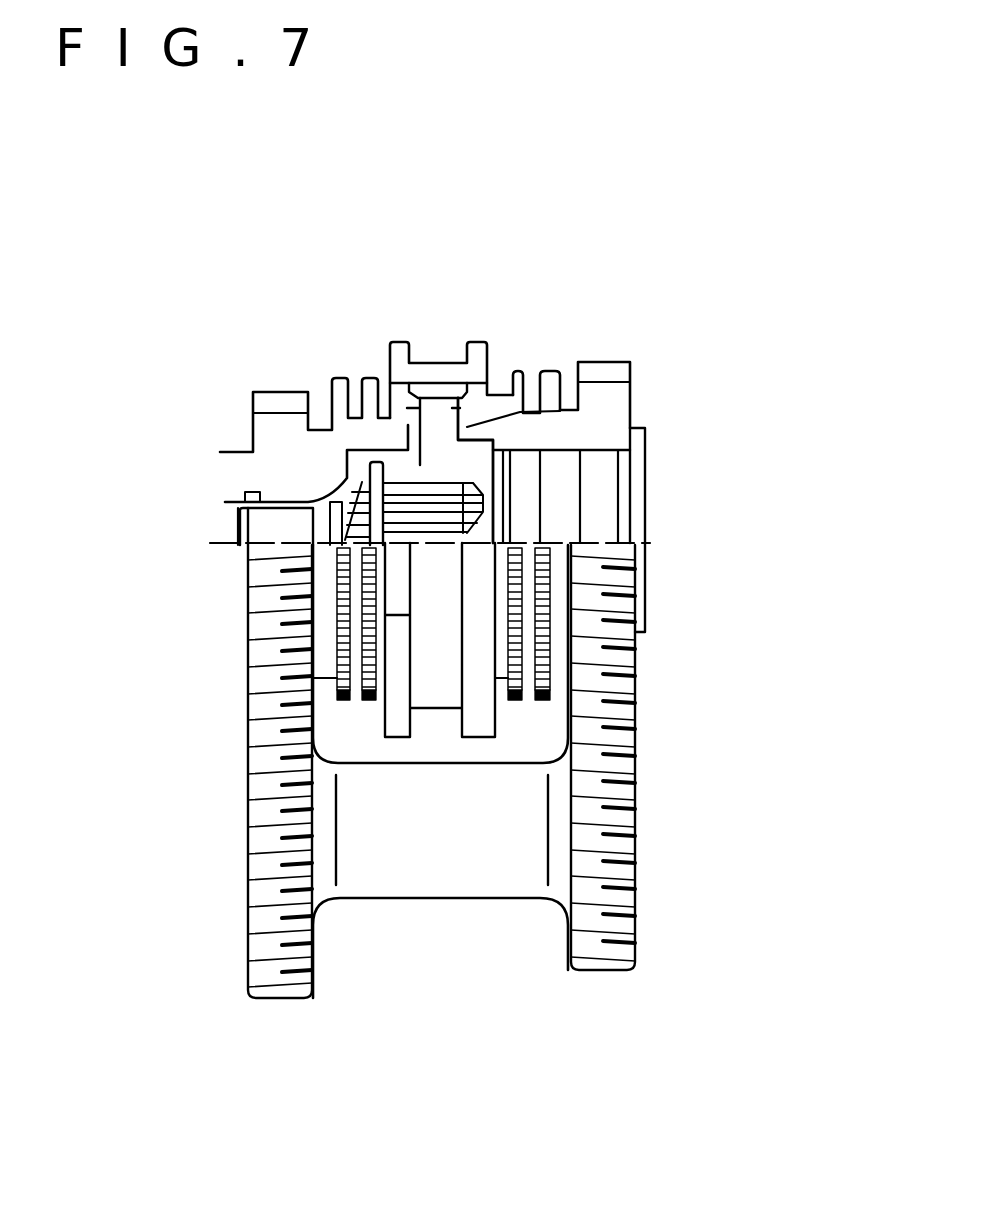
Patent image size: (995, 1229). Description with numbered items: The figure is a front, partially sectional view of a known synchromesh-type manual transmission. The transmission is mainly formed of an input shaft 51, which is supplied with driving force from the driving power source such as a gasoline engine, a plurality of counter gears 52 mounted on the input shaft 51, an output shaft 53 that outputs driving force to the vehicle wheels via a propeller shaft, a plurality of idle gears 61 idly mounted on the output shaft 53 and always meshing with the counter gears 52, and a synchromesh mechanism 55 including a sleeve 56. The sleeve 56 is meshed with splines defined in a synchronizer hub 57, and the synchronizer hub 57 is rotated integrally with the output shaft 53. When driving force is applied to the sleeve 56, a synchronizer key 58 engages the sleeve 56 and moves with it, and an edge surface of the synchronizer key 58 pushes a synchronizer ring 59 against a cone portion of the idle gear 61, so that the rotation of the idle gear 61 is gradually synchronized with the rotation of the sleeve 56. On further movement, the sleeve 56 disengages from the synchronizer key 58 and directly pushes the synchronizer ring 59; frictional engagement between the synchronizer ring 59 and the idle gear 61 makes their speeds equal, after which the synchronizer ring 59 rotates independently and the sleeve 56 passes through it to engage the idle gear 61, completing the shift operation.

The input shaft 51 is at (400, 887).
The counter gears 52 is at (635, 860).
The output shaft 53 is at (640, 580).
The synchromesh mechanism 55 is at (478, 308).
The sleeve 56 is at (393, 343).
The synchronizer hub 57 is at (430, 468).
The synchronizer key 58 is at (428, 399).
The synchronizer ring 59 is at (515, 377).
The idle gears 61 is at (610, 407).